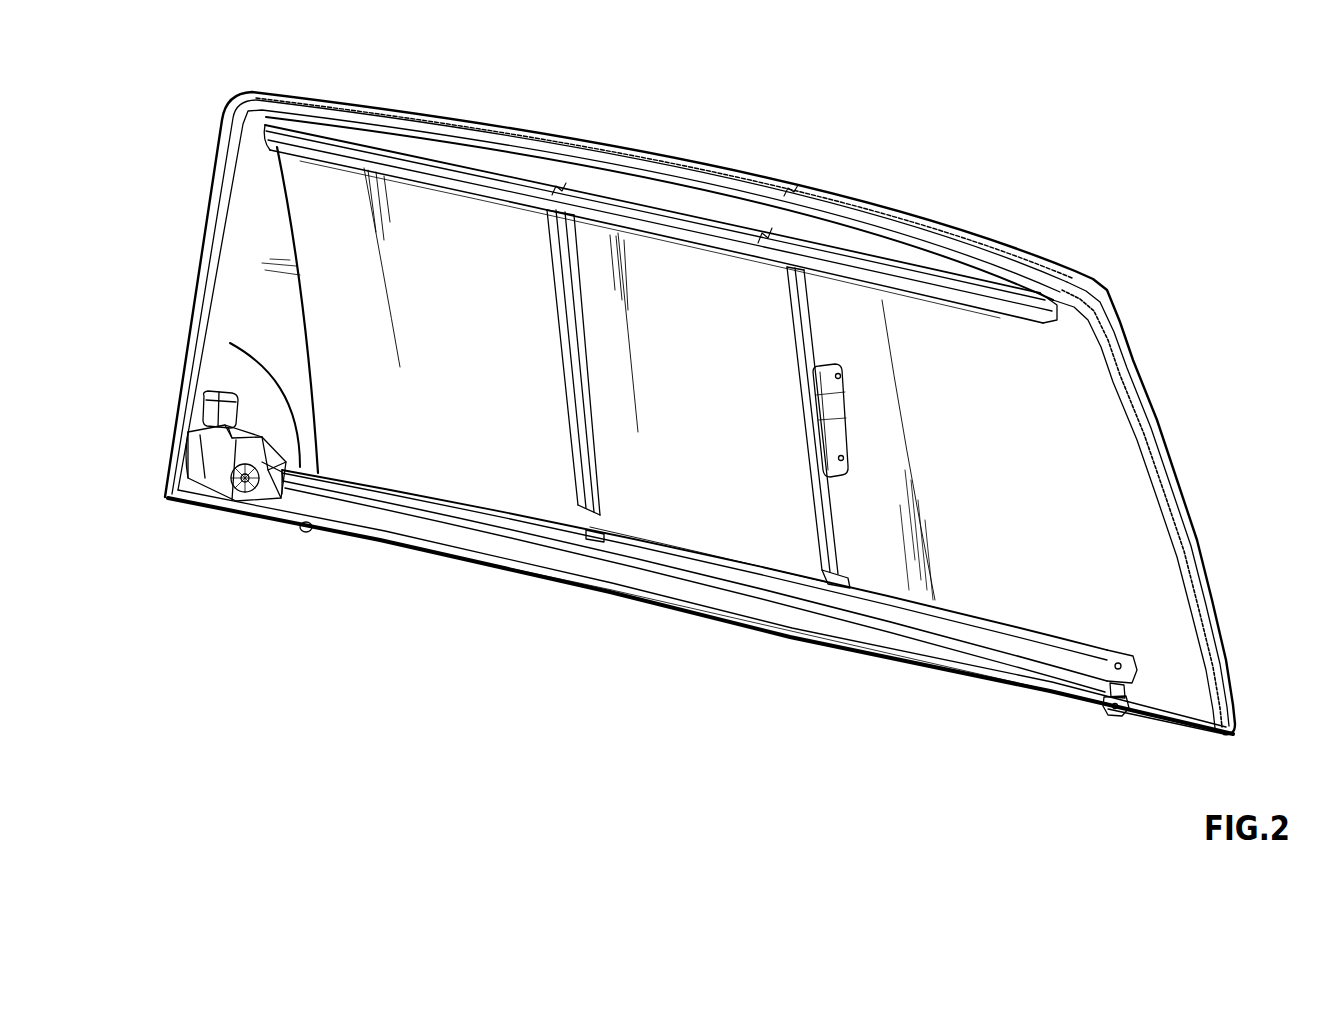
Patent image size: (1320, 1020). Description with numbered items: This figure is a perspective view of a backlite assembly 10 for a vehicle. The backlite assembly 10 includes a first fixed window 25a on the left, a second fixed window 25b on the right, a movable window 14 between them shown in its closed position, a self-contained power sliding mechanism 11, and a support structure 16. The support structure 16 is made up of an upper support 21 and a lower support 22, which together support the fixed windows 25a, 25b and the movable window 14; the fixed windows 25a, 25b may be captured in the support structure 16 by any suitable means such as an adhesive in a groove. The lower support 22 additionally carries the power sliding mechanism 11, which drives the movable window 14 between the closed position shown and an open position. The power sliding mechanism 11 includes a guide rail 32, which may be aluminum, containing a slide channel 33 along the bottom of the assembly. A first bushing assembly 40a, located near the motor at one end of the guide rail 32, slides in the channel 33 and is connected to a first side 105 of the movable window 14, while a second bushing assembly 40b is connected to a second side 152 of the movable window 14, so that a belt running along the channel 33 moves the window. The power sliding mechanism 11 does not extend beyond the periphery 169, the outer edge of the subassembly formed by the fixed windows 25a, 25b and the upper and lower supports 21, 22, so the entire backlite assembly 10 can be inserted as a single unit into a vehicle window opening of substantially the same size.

The backlite assembly 10 is at (1015, 154).
The power sliding mechanism 11 is at (407, 538).
The movable window 14 is at (473, 473).
The support structure 16 is at (798, 706).
The upper support 21 is at (745, 237).
The lower support 22 is at (735, 597).
The first fixed window 25a is at (238, 198).
The second fixed window 25b is at (1080, 622).
The guide rail 32 is at (975, 637).
The slide channel 33 is at (713, 560).
The first bushing assembly 40a is at (230, 343).
The second bushing assembly 40b is at (595, 537).
The first side 105 is at (307, 337).
The second side 152 is at (558, 262).
The periphery 169 is at (1140, 362).